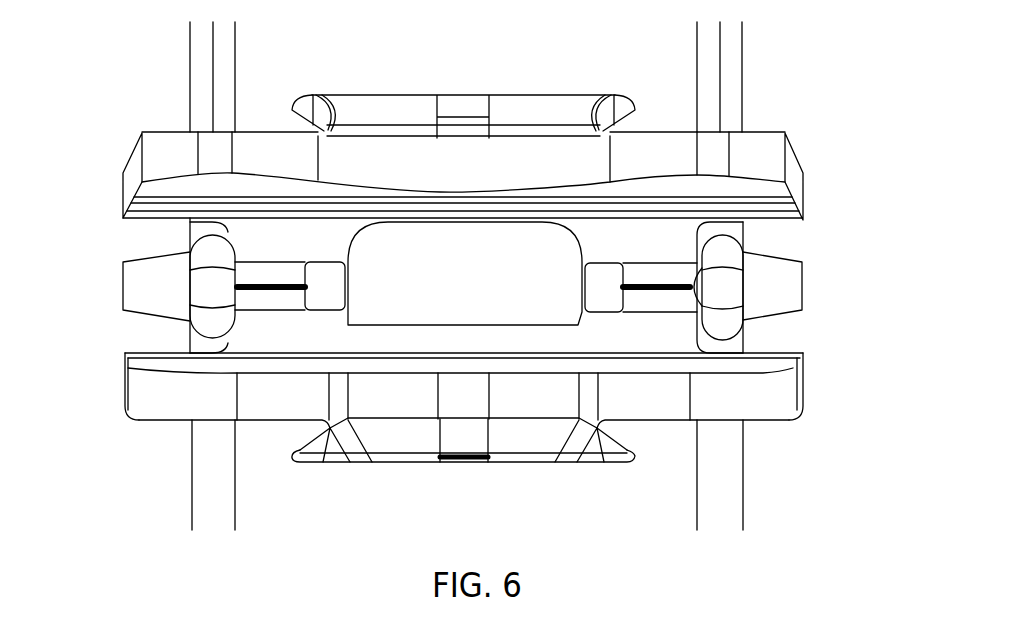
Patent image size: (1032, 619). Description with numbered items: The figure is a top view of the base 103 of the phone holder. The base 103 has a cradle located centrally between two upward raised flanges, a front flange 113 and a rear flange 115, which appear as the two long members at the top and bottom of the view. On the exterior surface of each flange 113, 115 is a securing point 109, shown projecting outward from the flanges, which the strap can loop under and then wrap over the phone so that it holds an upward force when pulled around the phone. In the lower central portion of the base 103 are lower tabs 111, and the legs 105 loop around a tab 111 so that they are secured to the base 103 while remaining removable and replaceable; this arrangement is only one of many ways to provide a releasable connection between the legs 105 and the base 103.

The base 103 is at (141, 121).
The legs 105 is at (730, 288).
The securing point 109 is at (563, 93).
The tab 111 is at (145, 283).
The front flange 113 is at (792, 387).
The rear flange 115 is at (788, 133).